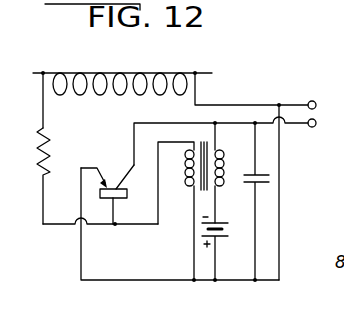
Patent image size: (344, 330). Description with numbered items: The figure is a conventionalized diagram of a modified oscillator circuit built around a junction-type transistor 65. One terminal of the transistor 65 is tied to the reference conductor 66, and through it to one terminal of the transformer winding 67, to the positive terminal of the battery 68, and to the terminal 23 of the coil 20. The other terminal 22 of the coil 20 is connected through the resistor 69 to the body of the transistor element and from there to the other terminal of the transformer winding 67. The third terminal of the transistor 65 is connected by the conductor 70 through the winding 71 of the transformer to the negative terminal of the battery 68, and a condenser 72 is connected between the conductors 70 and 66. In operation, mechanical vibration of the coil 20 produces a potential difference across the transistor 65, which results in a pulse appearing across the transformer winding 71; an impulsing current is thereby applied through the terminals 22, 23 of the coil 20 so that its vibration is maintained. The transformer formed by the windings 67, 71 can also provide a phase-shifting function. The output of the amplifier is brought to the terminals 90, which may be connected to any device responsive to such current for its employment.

The coil 20 is at (140, 72).
The coil terminal 22 is at (38, 68).
The coil terminal 23 is at (210, 72).
The junction-type transistor 65 is at (100, 195).
The reference conductor 66 is at (153, 275).
The transformer winding 67 is at (182, 211).
The battery 68 is at (223, 243).
The resistor 69 is at (57, 146).
The conductor 70 is at (175, 118).
The transformer winding 71 is at (235, 173).
The condenser 72 is at (262, 201).
The output terminals 90 is at (311, 190).